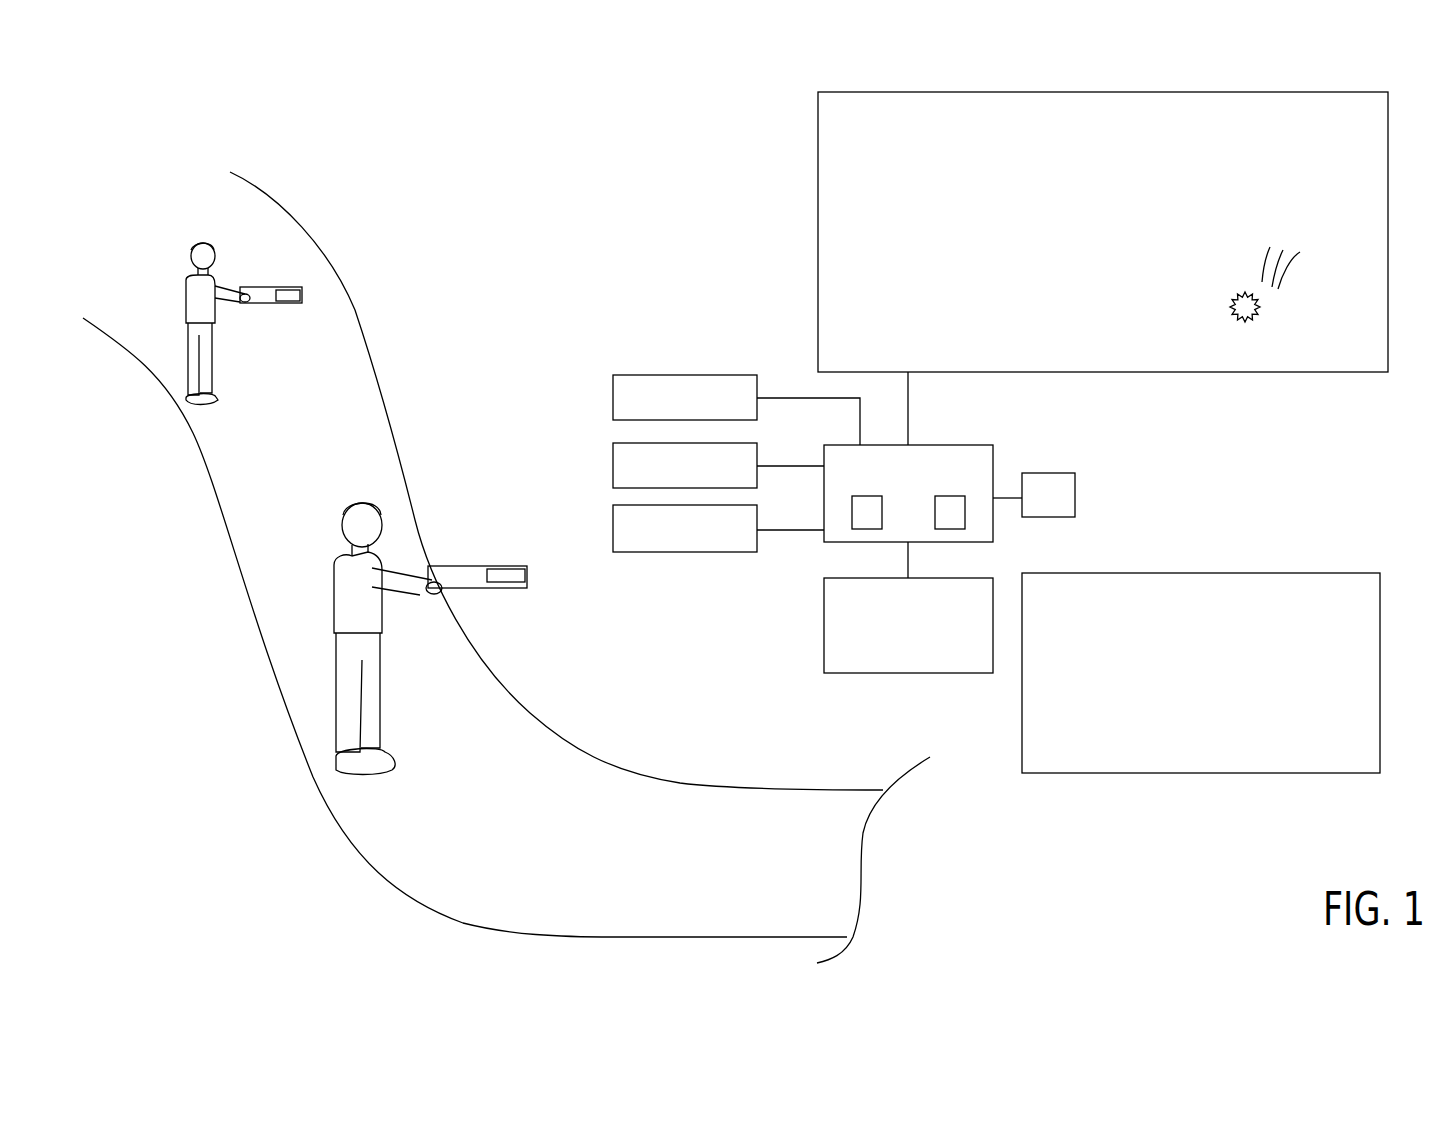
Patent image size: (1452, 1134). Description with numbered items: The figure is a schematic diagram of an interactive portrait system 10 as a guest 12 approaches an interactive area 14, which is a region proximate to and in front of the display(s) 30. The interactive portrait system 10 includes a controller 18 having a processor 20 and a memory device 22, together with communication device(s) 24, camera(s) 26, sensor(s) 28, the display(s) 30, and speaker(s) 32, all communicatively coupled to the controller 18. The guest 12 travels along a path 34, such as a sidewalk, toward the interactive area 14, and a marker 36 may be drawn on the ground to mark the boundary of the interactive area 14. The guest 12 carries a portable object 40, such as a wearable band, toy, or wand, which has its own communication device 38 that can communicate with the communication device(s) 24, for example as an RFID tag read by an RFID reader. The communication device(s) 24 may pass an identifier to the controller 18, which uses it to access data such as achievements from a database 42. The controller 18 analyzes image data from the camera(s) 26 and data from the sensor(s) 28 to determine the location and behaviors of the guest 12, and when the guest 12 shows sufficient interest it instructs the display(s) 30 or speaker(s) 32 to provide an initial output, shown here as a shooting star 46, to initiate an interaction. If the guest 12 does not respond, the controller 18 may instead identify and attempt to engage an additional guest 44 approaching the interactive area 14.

The interactive portrait system 10 is at (608, 128).
The guest 12 is at (352, 503).
The interactive area 14 is at (1372, 432).
The controller 18 is at (993, 455).
The processor 20 is at (950, 529).
The memory device 22 is at (867, 529).
The communication device(s) 24 is at (905, 673).
The camera(s) 26 is at (613, 398).
The sensor(s) 28 is at (613, 530).
The display(s) 30 is at (818, 232).
The speaker(s) 32 is at (613, 465).
The path 34 is at (623, 772).
The marker 36 is at (1380, 668).
The communication device 38 is at (282, 303).
The portable object 40 is at (253, 287).
The database 42 is at (1048, 473).
The additional guest 44 is at (196, 246).
The shooting star 46 is at (1258, 320).